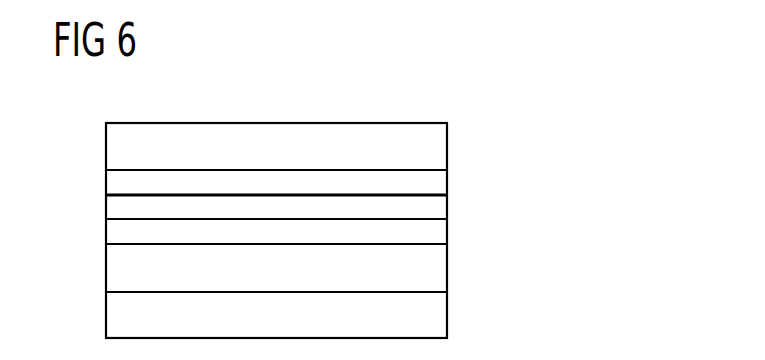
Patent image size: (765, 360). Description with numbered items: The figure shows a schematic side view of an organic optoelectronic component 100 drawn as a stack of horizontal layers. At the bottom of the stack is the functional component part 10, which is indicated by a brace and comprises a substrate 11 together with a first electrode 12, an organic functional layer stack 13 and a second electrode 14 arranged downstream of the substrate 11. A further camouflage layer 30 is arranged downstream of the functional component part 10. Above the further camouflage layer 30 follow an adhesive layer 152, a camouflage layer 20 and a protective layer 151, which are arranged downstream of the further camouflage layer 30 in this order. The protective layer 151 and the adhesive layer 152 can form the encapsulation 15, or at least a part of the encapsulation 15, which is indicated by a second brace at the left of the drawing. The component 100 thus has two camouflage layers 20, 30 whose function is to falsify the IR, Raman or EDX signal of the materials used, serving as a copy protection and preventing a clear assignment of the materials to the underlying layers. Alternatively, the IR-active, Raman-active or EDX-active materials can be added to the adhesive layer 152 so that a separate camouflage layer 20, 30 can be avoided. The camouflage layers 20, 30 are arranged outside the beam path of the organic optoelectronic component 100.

The organic optoelectronic component 100 is at (378, 82).
The encapsulation 15 is at (113, 149).
The protective layer 151 is at (438, 147).
The camouflage layer 20 is at (438, 182).
The adhesive layer 152 is at (438, 207).
The further camouflage layer 30 is at (438, 232).
The functional component part 10 is at (593, 243).
The first electrode 12 is at (345, 267).
The organic functional layer stack 13 is at (345, 267).
The second electrode 14 is at (438, 268).
The substrate 11 is at (438, 315).